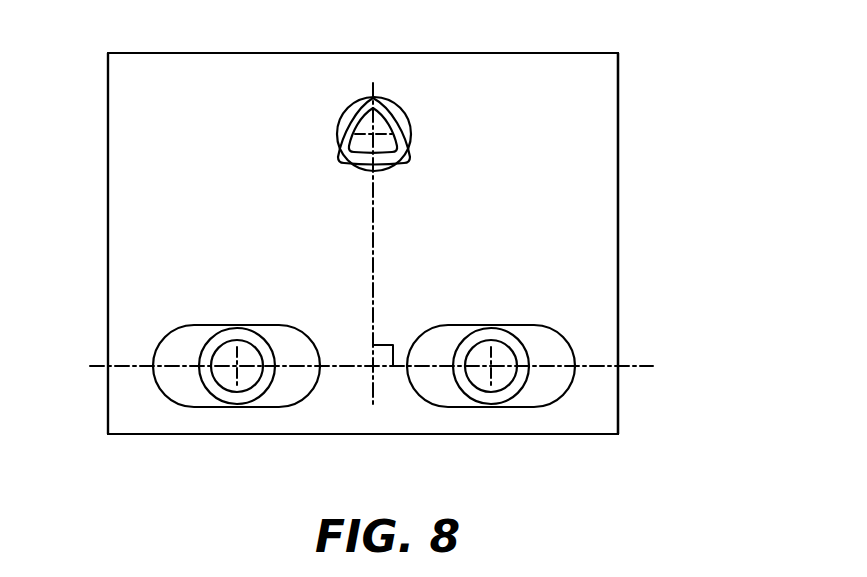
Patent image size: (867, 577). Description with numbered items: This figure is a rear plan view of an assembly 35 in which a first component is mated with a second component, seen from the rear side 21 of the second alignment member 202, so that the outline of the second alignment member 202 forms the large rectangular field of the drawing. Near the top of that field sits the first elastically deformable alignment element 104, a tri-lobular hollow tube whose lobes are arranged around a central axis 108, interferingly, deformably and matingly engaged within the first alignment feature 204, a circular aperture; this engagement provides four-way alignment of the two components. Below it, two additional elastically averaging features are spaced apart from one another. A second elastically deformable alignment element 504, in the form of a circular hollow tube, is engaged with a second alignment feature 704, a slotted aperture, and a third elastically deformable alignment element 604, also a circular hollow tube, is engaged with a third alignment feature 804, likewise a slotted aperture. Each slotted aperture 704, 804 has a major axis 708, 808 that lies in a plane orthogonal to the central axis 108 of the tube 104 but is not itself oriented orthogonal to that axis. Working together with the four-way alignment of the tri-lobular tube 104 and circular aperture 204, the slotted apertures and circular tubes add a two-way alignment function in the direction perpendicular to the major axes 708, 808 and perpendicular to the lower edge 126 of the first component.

The rear side of second alignment member 21 is at (578, 103).
The second alignment member 202 is at (558, 233).
The assembly 35 is at (628, 239).
The lower edge 126 is at (609, 447).
The elastically deformable alignment element 104 is at (397, 107).
The alignment feature 204 is at (339, 118).
The central axis 108 is at (373, 134).
The major axis 708 is at (123, 365).
The second elastically deformable alignment element 504 is at (199, 374).
The second alignment feature 704 is at (255, 405).
The major axis 808 is at (603, 365).
The third alignment feature 804 is at (475, 405).
The third elastically deformable alignment element 604 is at (528, 378).